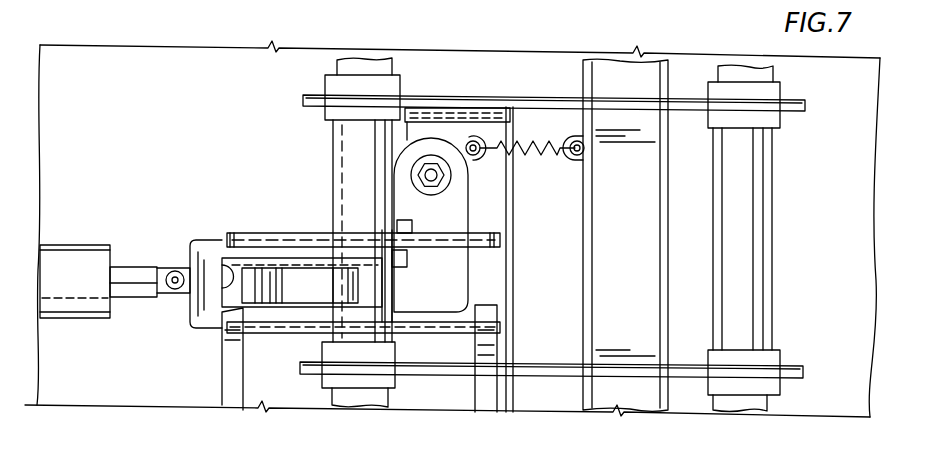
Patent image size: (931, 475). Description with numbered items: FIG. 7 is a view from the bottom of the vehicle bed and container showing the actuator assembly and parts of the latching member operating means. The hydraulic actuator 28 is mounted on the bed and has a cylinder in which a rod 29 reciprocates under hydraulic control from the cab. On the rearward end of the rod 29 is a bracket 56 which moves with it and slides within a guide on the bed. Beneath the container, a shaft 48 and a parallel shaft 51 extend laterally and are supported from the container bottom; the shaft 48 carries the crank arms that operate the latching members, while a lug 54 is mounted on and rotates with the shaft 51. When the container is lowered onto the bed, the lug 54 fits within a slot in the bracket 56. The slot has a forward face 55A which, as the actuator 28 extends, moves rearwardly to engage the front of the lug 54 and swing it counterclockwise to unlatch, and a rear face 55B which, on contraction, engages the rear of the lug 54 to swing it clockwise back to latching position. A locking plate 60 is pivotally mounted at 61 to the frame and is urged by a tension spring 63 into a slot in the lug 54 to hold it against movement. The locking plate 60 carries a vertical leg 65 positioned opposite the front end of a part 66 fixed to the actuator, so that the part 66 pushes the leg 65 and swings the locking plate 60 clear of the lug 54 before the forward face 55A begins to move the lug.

The hydraulic actuator 28 is at (82, 245).
The rod 29 is at (135, 267).
The shaft 48 is at (769, 214).
The shaft 51 is at (335, 139).
The lug 54 is at (287, 290).
The forward face 55A is at (223, 270).
The rear face 55B is at (343, 278).
The bracket 56 is at (185, 315).
The locking plate 60 is at (468, 210).
The pivot 61 is at (432, 162).
The tension spring 63 is at (538, 146).
The vertical leg 65 is at (410, 257).
The part 66 is at (304, 233).